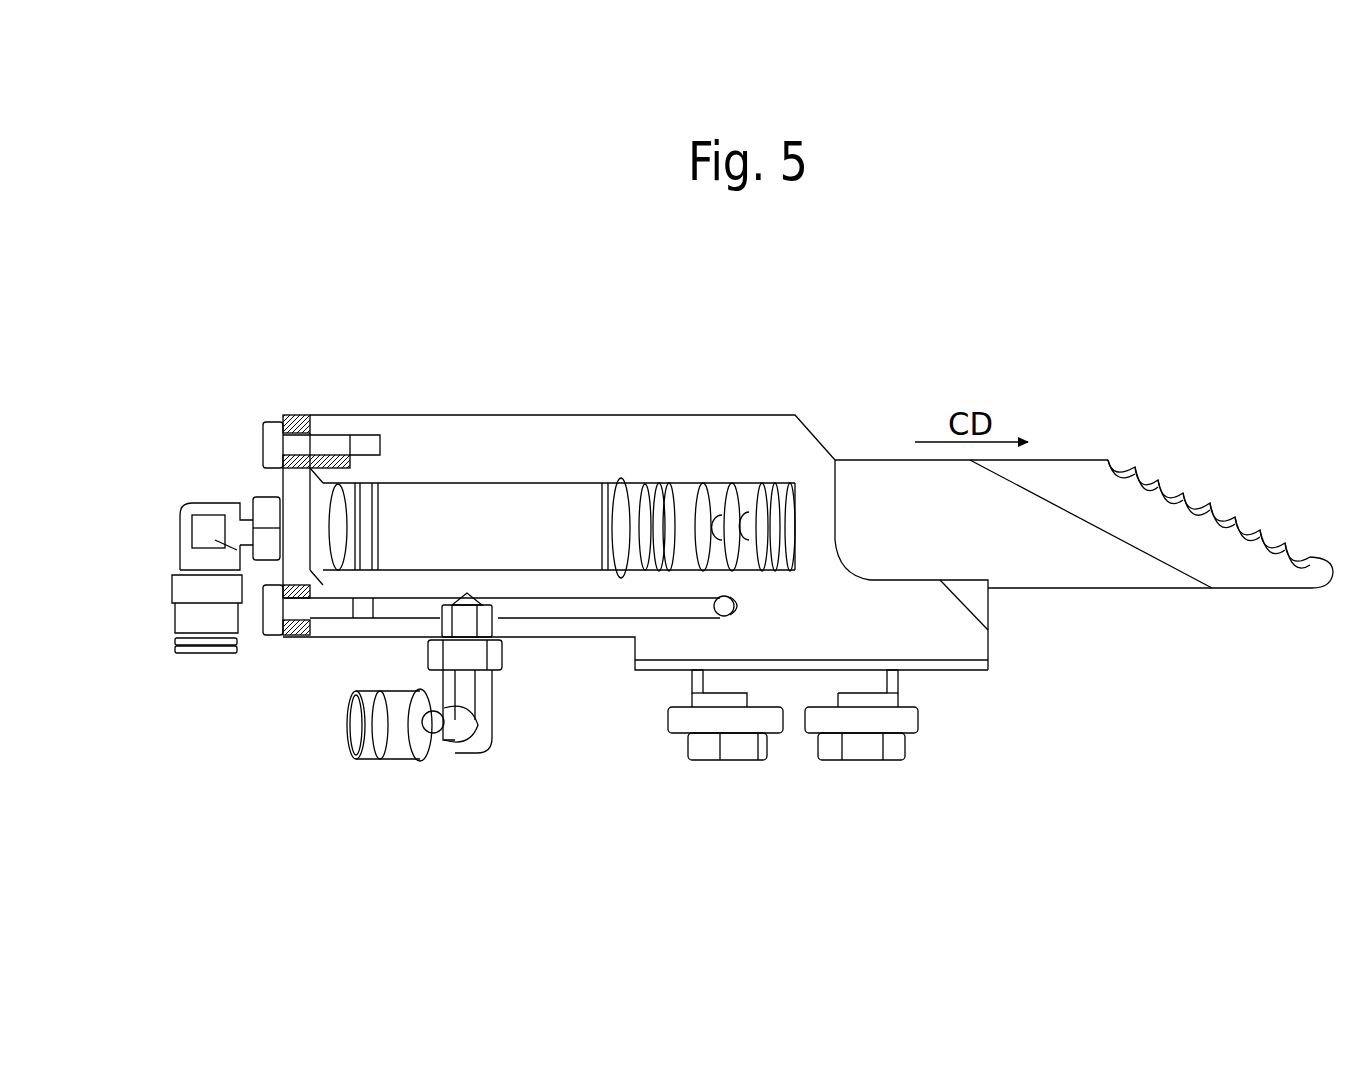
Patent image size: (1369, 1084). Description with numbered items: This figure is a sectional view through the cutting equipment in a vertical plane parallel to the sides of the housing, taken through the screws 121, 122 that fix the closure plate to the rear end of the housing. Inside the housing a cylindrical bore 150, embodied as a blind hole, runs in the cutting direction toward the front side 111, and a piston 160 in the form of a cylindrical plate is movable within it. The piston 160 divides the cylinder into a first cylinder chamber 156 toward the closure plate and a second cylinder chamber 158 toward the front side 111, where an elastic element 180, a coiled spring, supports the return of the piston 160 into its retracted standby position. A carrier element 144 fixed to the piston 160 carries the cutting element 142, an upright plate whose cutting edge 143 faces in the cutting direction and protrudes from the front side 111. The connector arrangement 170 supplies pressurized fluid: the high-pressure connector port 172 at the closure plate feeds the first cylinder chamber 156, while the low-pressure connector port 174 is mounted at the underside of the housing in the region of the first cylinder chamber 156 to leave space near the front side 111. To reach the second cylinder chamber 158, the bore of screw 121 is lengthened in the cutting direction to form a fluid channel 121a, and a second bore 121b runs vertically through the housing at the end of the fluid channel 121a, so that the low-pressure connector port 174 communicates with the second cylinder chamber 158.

The front side 111 is at (840, 500).
The screw 121 is at (272, 615).
The fluid channel 121a is at (538, 612).
The second bore 121b is at (717, 608).
The screw 122 is at (270, 440).
The cutting element 142 is at (1048, 543).
The cutting edge 143 is at (1158, 480).
The carrier element 144 is at (684, 500).
The cylindrical bore 150 is at (483, 515).
The first cylinder chamber 156 is at (428, 520).
The second cylinder chamber 158 is at (661, 490).
The piston 160 is at (623, 500).
The connector arrangement 170 is at (198, 780).
The high-pressure connector port 172 is at (177, 580).
The low-pressure connector port 174 is at (390, 733).
The elastic element 180 is at (671, 500).